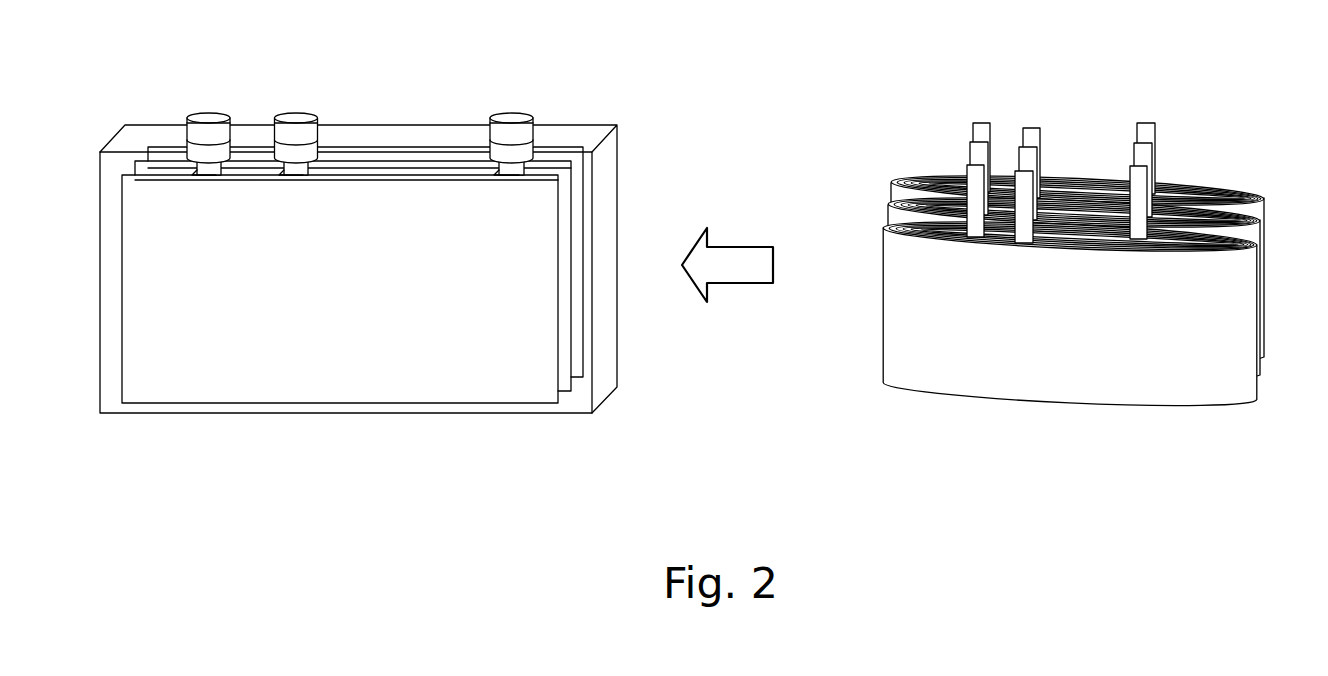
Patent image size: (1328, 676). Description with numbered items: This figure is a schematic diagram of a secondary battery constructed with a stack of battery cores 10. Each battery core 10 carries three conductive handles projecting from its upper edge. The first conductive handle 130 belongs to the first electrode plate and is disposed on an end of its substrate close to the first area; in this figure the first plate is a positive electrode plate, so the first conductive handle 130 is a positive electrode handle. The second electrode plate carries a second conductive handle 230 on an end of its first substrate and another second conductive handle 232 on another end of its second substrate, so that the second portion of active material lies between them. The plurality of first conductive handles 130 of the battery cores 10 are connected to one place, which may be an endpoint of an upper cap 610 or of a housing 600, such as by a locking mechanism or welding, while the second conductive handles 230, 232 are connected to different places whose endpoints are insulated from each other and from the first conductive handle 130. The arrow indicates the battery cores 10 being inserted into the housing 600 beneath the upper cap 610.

The battery core 10 is at (1077, 373).
The first conductive handle 130 is at (1147, 133).
The second conductive handle 230 is at (977, 133).
The another second conductive handle 232 is at (1043, 137).
The housing 600 is at (606, 364).
The upper cap 610 is at (525, 120).